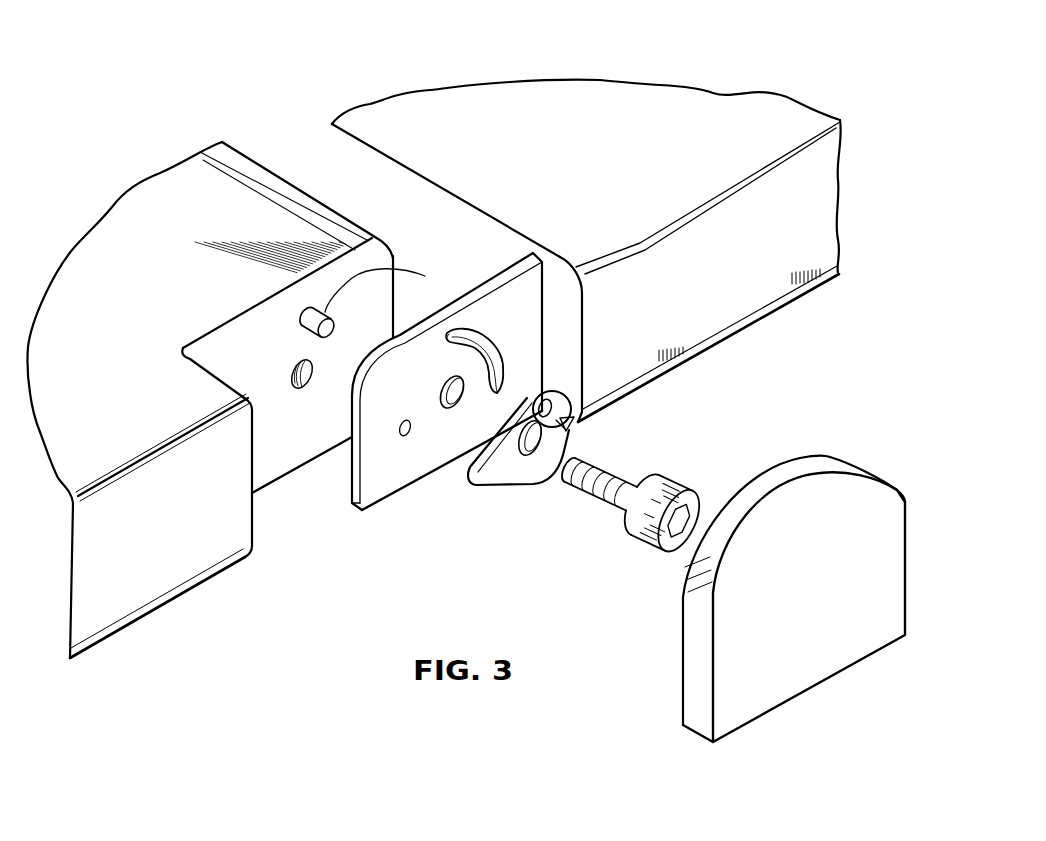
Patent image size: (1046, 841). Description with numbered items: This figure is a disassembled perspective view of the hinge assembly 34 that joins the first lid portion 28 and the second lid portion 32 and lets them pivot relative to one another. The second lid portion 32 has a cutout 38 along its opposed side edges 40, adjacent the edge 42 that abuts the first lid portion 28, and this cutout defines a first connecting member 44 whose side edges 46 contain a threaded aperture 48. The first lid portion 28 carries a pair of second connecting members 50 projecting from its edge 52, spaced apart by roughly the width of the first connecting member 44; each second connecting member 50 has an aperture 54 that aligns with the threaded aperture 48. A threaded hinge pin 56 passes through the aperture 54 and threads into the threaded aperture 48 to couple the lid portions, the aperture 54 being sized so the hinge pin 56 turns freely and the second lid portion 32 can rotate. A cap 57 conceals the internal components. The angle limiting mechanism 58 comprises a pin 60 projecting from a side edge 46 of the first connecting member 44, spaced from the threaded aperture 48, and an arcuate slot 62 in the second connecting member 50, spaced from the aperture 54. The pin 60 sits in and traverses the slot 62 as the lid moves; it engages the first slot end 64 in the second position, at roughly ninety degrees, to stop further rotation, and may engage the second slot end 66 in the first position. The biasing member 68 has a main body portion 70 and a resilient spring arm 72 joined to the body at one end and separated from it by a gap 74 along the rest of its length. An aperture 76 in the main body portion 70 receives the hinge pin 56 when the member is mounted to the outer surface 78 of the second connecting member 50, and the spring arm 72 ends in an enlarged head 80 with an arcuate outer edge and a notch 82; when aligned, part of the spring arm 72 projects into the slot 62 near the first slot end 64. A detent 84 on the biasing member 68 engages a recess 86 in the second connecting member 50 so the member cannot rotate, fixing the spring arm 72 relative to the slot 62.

The first lid portion 28 is at (727, 105).
The second lid portion 32 is at (98, 232).
The hinge assembly 34 is at (436, 546).
The cutout 38 is at (213, 368).
The opposed side edges 40 is at (165, 580).
The edge 42 is at (243, 150).
The first connecting member 44 is at (153, 168).
The side edges 46 is at (252, 320).
The threaded aperture 48 is at (298, 390).
The second connecting member 50 is at (532, 281).
The edge 52 is at (370, 158).
The aperture 54 is at (453, 410).
The threaded hinge pin 56 is at (620, 448).
The cap 57 is at (795, 462).
The angle limiting mechanism 58 is at (476, 322).
The pin 60 is at (338, 322).
The arcuate slot 62 is at (490, 336).
The first slot end 64 is at (497, 390).
The second slot end 66 is at (447, 341).
The biasing member 68 is at (528, 443).
The main body portion 70 is at (497, 476).
The resilient spring arm 72 is at (567, 390).
The gap 74 is at (570, 427).
The aperture 76 is at (531, 458).
The outer surface 78 is at (387, 478).
The enlarged head 80 is at (541, 393).
The notch 82 is at (572, 425).
The detent 84 is at (466, 465).
The recess 86 is at (403, 421).